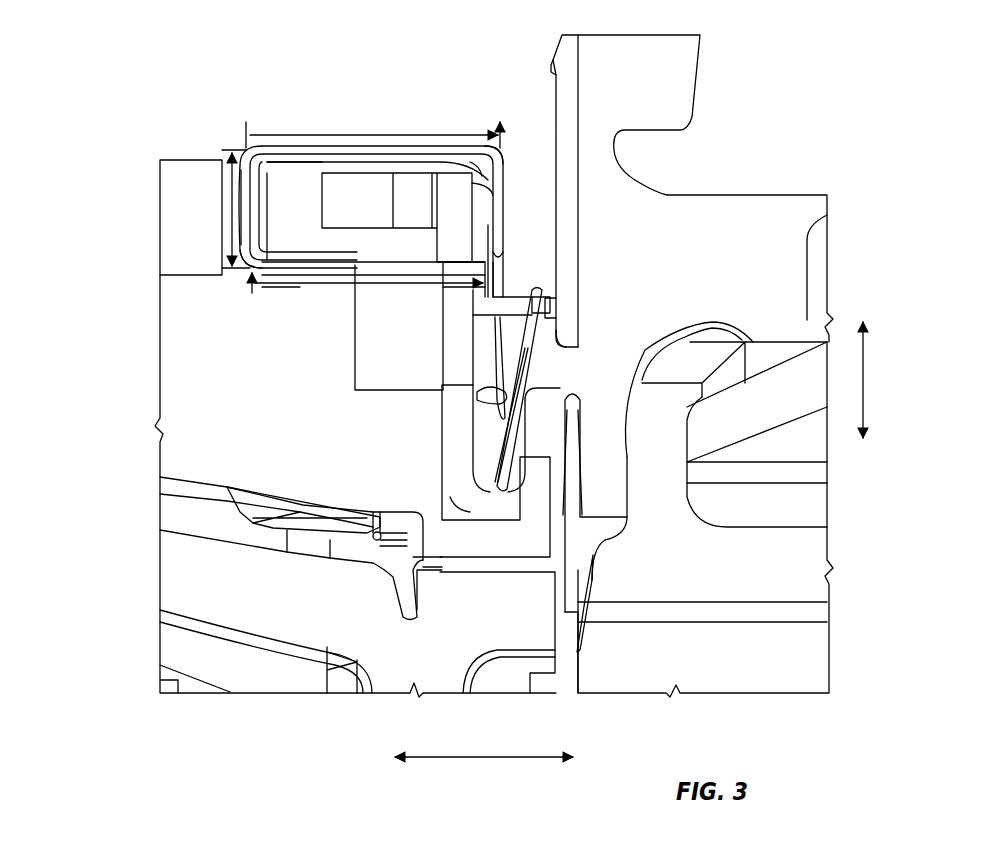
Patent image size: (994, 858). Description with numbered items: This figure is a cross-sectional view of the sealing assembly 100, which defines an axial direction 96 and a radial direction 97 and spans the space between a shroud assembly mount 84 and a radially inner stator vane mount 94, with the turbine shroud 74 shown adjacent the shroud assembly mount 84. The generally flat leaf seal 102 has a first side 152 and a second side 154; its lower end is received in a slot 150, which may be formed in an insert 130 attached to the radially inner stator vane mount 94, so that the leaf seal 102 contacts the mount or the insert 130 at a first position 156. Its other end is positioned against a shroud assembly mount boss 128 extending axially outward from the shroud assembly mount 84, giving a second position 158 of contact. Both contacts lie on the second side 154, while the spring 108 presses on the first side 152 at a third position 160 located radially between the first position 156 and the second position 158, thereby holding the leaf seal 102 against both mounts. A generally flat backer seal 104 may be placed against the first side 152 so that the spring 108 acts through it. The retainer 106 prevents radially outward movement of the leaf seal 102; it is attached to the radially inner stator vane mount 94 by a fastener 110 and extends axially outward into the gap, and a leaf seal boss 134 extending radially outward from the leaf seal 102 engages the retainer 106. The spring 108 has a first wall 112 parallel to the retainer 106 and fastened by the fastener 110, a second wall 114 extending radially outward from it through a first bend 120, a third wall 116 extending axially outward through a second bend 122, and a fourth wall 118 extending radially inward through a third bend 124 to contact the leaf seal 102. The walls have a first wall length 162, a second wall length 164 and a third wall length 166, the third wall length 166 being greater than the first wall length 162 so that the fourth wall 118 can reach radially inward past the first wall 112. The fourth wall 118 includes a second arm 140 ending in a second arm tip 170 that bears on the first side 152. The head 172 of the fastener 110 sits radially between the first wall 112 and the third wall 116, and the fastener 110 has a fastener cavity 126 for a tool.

The sealing assembly 100 is at (128, 62).
The radially inner stator vane mount 94 is at (250, 452).
The shroud assembly mount 84 is at (770, 200).
The radial direction 97 is at (862, 400).
The axial direction 96 is at (495, 758).
The turbine shroud 74 is at (808, 560).
The shroud assembly mount boss 128 is at (555, 371).
The third position 160 is at (497, 422).
The first position 156 is at (538, 500).
The leaf seal boss 134 is at (548, 272).
The second position 158 is at (548, 345).
The second bend 122 is at (238, 150).
The second wall 114 is at (242, 210).
The head 172 is at (345, 198).
The second wall length 164 is at (232, 232).
The first bend 120 is at (243, 266).
The first wall length 162 is at (262, 290).
The third wall 116 is at (418, 135).
The third wall length 166 is at (460, 148).
The third bend 124 is at (496, 147).
The spring 108 is at (510, 160).
The fourth wall 118 is at (500, 195).
The fastener cavity 126 is at (385, 198).
The retainer 106 is at (507, 300).
The first wall 112 is at (310, 285).
The fastener 110 is at (352, 335).
The second arm 140 is at (487, 345).
The first side 152 is at (518, 368).
The second arm tip 170 is at (503, 425).
The backer seal 104 is at (513, 437).
The slot 150 is at (478, 456).
The second side 154 is at (507, 428).
The leaf seal 102 is at (508, 480).
The insert 130 is at (452, 588).